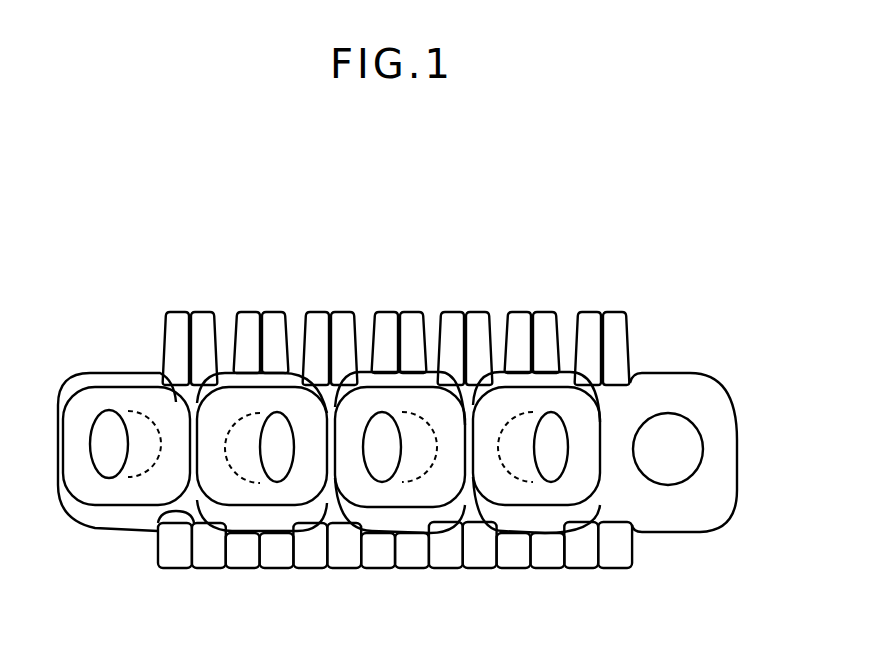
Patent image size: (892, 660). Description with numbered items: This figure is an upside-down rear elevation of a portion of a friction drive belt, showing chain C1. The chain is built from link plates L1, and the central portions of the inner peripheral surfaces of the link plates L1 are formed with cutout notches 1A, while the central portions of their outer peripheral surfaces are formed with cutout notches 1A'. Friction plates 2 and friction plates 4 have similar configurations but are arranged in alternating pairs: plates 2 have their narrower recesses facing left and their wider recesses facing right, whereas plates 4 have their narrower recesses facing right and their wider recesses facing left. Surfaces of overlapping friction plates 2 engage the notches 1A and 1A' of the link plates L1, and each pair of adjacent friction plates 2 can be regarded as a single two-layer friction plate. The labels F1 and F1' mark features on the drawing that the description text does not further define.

The cutout notch 1A is at (126, 414).
The cutout notch 1A' is at (168, 561).
The flange F1 is at (194, 329).
The lower flange F1' is at (222, 567).
The link plate L1 is at (127, 518).
The chain C1 is at (712, 398).
The friction plate 2 is at (488, 306).
The friction plate 4 is at (421, 306).